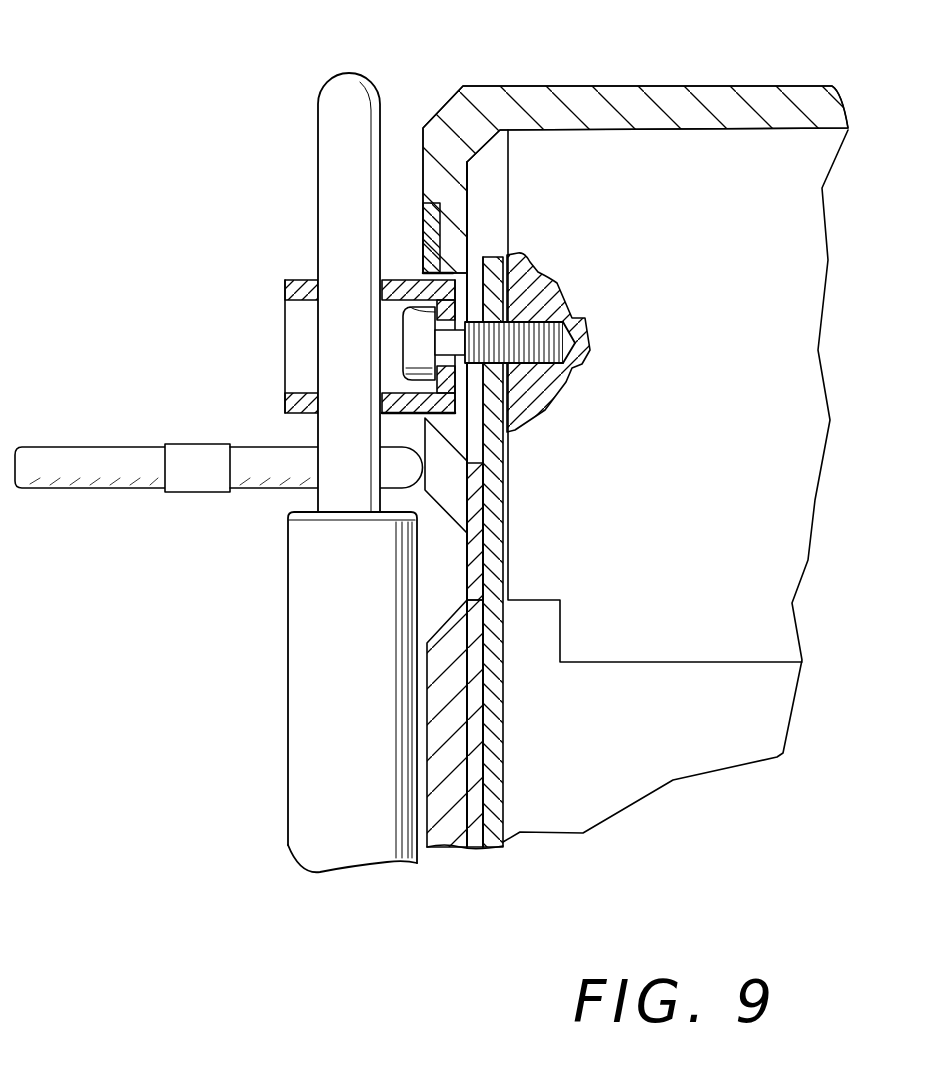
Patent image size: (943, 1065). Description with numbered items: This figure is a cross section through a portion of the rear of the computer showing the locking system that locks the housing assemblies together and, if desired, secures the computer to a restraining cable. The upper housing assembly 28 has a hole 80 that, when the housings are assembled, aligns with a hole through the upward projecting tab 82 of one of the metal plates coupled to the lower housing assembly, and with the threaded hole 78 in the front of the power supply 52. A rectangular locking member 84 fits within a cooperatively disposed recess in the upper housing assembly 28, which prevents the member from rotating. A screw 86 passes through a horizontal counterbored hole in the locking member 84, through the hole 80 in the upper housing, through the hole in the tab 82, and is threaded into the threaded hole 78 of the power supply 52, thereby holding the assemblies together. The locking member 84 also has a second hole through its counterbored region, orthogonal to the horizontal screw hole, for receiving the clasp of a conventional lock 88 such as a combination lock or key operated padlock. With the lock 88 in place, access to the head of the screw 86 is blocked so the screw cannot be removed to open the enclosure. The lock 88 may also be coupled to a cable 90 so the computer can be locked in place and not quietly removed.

The upper housing assembly 28 is at (735, 87).
The power supply 52 is at (798, 188).
The threaded hole 78 is at (545, 305).
The hole 80 is at (467, 260).
The tab 82 is at (495, 258).
The locking member 84 is at (287, 279).
The screw 86 is at (403, 345).
The lock 88 is at (300, 644).
The cable 90 is at (107, 472).